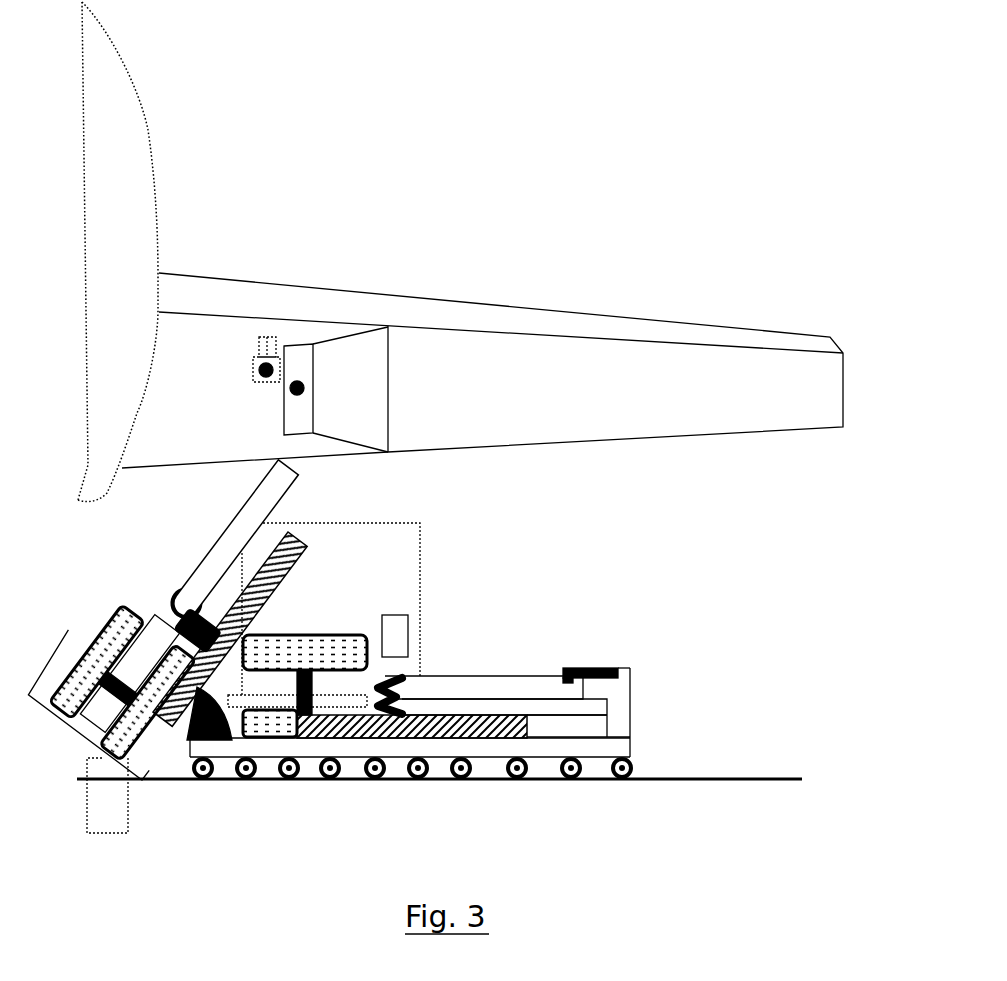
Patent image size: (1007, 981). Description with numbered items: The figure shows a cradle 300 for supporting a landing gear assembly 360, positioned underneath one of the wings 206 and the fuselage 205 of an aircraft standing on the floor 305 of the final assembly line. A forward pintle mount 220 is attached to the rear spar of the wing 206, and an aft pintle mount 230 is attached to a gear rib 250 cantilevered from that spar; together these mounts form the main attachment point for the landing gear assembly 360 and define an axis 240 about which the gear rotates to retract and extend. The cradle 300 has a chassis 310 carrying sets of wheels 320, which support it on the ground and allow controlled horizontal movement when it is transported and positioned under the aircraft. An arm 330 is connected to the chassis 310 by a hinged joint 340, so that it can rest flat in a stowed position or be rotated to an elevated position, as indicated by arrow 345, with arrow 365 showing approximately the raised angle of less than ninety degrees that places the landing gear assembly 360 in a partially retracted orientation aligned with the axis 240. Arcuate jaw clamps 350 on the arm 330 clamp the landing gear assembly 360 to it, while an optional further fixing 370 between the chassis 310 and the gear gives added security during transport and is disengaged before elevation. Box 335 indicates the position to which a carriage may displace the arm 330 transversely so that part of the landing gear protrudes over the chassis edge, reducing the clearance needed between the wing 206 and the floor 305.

The fuselage 205 is at (150, 148).
The wing 206 is at (590, 317).
The forward pintle mount 220 is at (268, 330).
The aft pintle mount 230 is at (297, 367).
The axis 240 is at (277, 388).
The gear rib 250 is at (373, 350).
The cradle 300 is at (583, 570).
The floor 305 is at (548, 783).
The chassis 310 is at (633, 748).
The sets of wheels 320 is at (637, 767).
The arm 330 is at (358, 738).
The box 335 is at (270, 737).
The hinged joint 340 is at (190, 722).
The arrow 345 is at (300, 558).
The arcuate jaw clamps 350 is at (393, 680).
The landing gear assembly 360 is at (487, 675).
The arrow 365 is at (227, 523).
The further fixing 370 is at (88, 645).